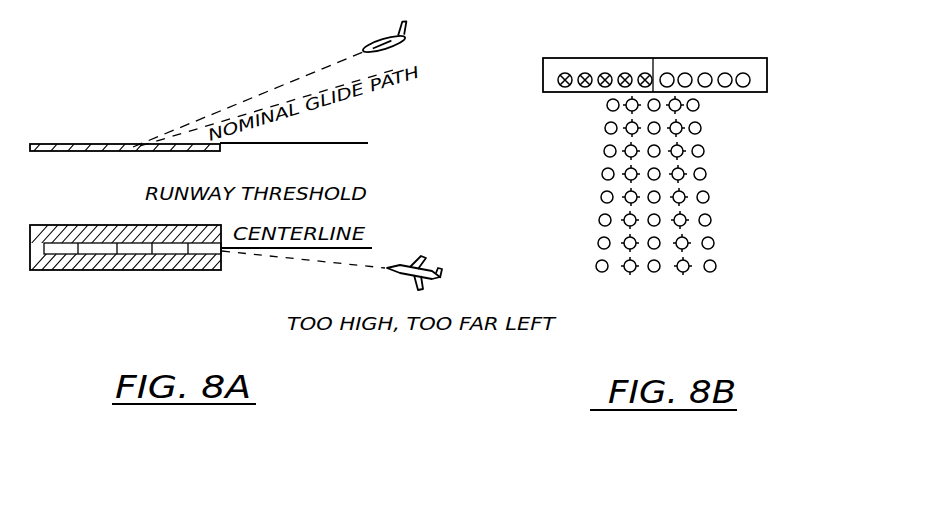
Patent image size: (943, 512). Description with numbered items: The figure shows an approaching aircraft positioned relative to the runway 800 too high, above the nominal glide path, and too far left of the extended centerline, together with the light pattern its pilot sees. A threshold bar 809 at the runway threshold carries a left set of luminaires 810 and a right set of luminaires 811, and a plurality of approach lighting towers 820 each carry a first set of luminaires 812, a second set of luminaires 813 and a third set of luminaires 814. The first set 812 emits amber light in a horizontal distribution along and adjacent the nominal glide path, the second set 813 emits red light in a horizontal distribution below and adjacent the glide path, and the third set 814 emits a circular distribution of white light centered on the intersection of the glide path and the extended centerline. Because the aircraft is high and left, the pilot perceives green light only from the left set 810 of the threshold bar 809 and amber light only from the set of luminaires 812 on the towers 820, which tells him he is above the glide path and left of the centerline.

In FIG. 8A, the runway 800 is at (135, 153).
In FIG. 8B, the threshold bar 809 is at (695, 51).
In FIG. 8B, the left set of luminaires 810 is at (570, 58).
In FIG. 8B, the right set of luminaires 811 is at (745, 58).
In FIG. 8B, the first set of luminaires 812 is at (683, 273).
In FIG. 8B, the second set of luminaires 813 is at (710, 272).
In FIG. 8B, the third set of luminaires 814 is at (654, 272).
In FIG. 8B, the approach lighting towers 820 is at (691, 223).